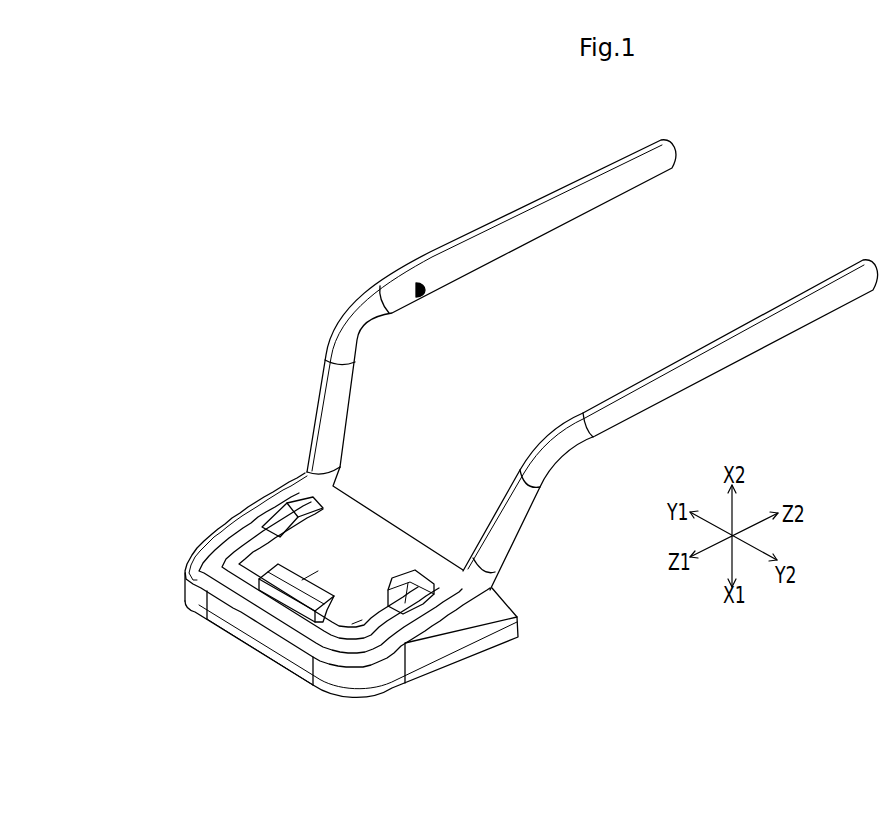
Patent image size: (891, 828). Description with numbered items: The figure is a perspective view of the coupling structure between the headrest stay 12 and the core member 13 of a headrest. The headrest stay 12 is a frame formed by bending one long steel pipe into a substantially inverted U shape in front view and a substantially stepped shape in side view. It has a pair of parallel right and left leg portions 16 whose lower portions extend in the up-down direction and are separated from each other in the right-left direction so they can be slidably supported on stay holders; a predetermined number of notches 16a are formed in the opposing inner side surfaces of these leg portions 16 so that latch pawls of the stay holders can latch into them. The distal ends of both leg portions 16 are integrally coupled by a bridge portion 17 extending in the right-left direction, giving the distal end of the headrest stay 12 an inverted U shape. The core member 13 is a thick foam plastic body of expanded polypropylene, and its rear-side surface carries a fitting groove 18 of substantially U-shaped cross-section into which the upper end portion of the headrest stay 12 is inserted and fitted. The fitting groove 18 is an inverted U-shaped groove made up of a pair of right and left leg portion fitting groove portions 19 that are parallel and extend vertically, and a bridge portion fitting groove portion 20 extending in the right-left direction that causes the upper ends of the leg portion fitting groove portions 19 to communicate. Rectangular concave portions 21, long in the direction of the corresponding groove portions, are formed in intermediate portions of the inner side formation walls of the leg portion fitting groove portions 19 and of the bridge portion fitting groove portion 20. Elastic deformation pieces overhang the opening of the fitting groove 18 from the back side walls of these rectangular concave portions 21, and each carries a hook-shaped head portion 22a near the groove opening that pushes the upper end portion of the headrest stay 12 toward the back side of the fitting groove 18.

The headrest stay 12 is at (307, 288).
The core member 13 is at (236, 495).
The leg portions 16 is at (760, 328).
The notches 16a is at (425, 297).
The bridge portion 17 is at (263, 603).
The fitting groove 18 is at (205, 549).
The leg portion fitting groove portions 19 is at (292, 483).
The bridge portion fitting groove portion 20 is at (355, 623).
The rectangular concave portions 21 is at (302, 580).
The hook-shaped head portion 22a is at (285, 515).